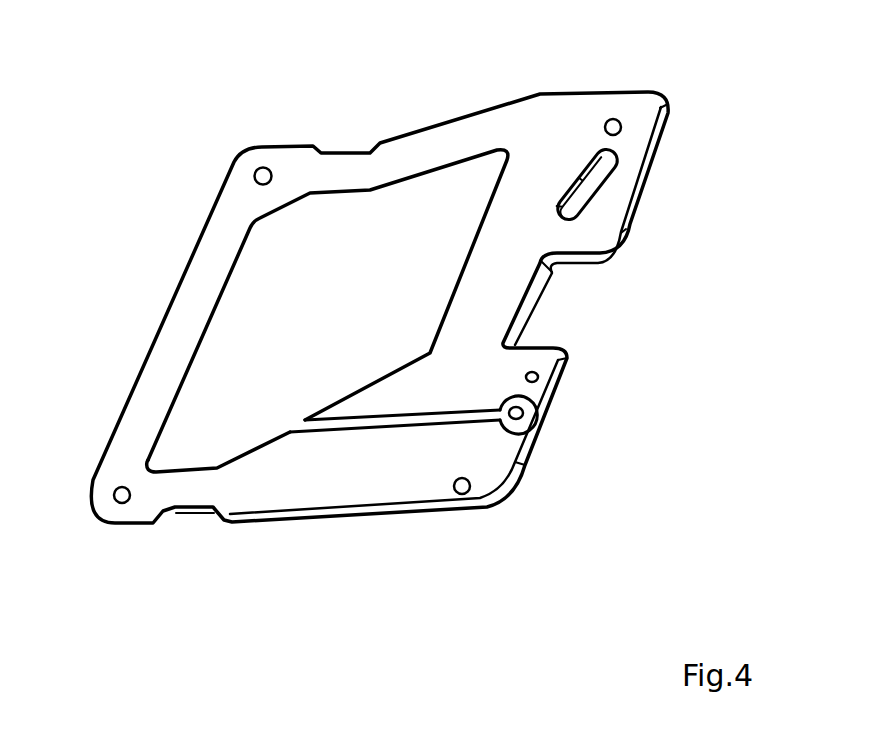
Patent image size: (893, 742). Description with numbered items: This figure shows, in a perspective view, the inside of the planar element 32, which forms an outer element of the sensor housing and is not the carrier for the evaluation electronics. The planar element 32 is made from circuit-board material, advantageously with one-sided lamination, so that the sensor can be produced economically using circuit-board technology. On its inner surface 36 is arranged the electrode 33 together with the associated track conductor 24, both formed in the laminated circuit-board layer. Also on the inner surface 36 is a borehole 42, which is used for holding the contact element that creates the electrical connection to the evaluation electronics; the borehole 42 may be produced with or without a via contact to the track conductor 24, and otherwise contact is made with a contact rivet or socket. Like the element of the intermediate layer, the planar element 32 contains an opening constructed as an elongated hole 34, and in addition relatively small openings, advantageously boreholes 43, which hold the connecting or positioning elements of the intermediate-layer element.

The track conductor 24 is at (440, 421).
The planar element 32 is at (540, 125).
The electrode 33 is at (262, 305).
The elongated hole 34 is at (596, 190).
The inner surface 36 is at (318, 467).
The borehole 42 is at (523, 414).
The boreholes 43 is at (265, 163).